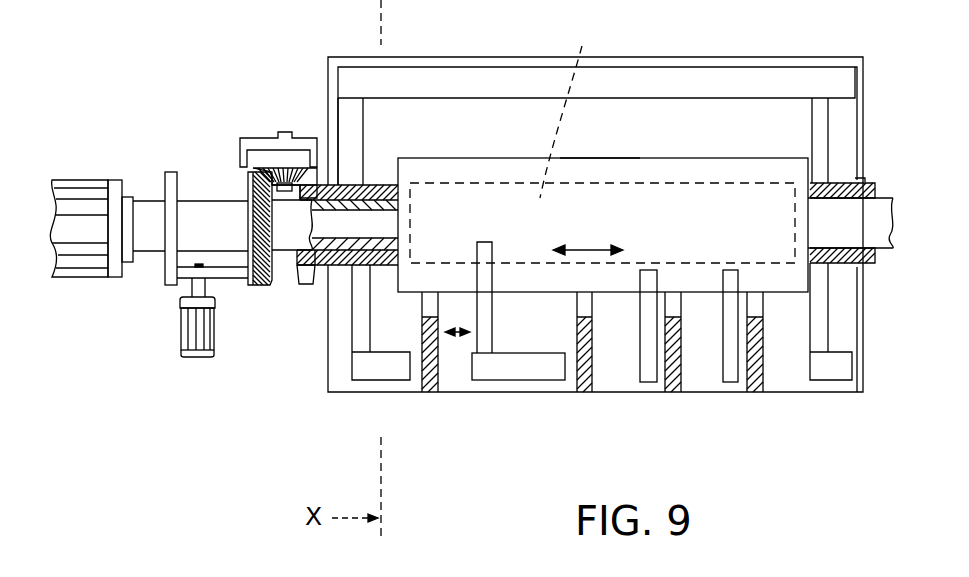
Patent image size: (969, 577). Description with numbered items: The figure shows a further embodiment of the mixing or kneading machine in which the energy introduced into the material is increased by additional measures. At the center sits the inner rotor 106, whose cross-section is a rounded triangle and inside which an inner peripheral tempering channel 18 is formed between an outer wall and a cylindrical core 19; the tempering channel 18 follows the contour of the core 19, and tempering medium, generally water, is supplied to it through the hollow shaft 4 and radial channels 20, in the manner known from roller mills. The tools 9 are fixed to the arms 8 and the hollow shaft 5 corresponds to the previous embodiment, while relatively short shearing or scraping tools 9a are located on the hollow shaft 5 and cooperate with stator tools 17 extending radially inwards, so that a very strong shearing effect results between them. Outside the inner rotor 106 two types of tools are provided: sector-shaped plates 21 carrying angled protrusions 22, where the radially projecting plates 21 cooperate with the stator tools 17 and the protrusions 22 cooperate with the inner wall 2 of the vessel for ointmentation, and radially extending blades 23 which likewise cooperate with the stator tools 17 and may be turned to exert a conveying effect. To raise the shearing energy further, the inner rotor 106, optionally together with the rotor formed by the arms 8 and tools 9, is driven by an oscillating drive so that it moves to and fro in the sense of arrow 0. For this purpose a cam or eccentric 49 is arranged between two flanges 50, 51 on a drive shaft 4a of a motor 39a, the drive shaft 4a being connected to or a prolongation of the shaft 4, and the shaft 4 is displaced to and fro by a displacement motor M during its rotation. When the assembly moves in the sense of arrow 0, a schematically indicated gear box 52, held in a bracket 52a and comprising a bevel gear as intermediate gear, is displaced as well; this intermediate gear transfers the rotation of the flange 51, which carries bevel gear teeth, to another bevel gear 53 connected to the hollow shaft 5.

The inner wall 2 is at (623, 381).
The hollow shaft 4 is at (353, 217).
The drive shaft 4a is at (150, 213).
The hollow shaft 5 is at (373, 187).
The arms 8 is at (352, 122).
The tools 9 is at (690, 82).
The shearing or scraping tools 9a is at (366, 376).
The stator tools 17 is at (457, 381).
The tempering channel 18 is at (492, 170).
The core 19 is at (573, 108).
The radial channels 20 is at (405, 268).
The sector-shaped plates 21 is at (493, 303).
The angled protrusions 22 is at (548, 381).
The radially extending blades 23 is at (717, 358).
The motor 39a is at (95, 278).
The eccentric 49 is at (222, 273).
The flange 50 is at (170, 286).
The flange 51 is at (248, 288).
The gear box 52 is at (245, 142).
The pinion bracket 52a is at (267, 168).
The bevel gear 53 is at (307, 286).
The inner rotor 106 is at (585, 158).
The arrow O 0 is at (588, 237).
The displacement motor M is at (195, 358).